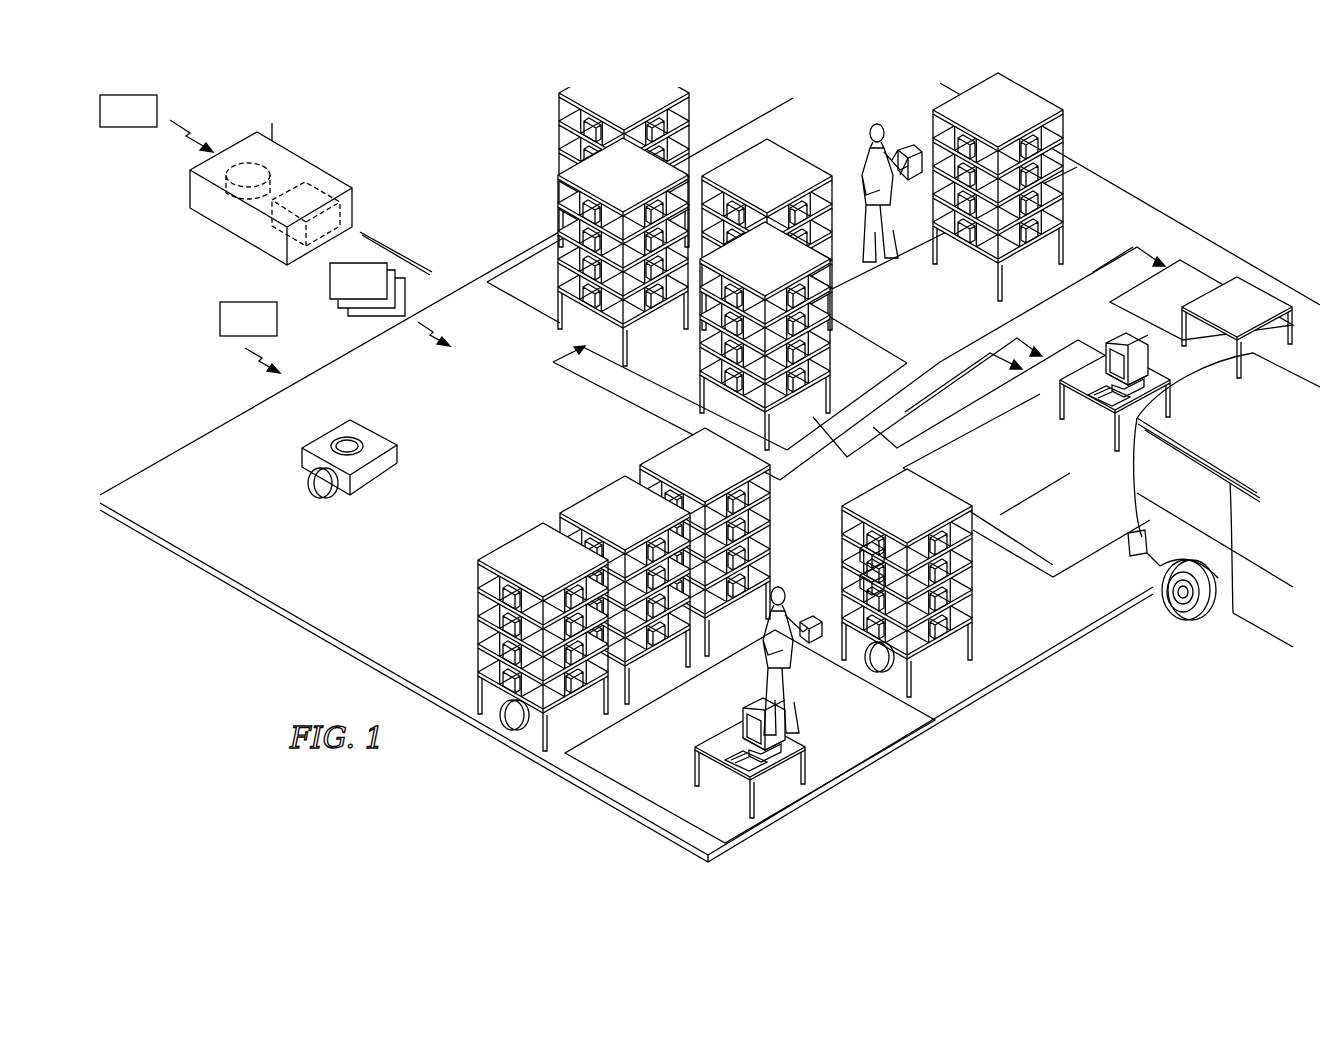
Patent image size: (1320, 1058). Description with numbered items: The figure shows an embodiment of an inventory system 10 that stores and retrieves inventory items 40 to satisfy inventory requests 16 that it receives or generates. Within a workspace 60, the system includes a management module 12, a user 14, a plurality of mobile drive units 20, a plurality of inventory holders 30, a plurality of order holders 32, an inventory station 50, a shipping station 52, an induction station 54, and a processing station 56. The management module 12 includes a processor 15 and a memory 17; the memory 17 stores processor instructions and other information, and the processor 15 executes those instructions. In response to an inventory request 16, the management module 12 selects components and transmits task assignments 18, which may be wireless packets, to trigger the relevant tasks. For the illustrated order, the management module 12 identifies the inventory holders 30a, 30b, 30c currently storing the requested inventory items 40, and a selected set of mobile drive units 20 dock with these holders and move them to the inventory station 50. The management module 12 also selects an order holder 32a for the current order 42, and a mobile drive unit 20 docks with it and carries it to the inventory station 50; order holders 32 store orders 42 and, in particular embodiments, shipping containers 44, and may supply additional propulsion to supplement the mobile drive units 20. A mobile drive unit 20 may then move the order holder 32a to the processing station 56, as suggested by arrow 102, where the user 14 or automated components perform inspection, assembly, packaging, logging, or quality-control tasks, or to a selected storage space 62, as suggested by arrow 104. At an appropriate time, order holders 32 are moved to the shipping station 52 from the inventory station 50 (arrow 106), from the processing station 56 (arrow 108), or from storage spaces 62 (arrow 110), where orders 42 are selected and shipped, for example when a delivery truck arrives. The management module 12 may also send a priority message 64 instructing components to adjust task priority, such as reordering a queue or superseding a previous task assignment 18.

The inventory system 10 is at (515, 195).
The management module 12 is at (271, 184).
The user 14 is at (855, 157).
The processor 15 is at (290, 147).
The inventory requests 16 is at (157, 108).
The memory 17 is at (245, 208).
The task assignments 18 is at (398, 260).
The mobile drive units 20 is at (385, 480).
The inventory holders 30 is at (633, 110).
The inventory holder 30a is at (555, 565).
The inventory holder 30b is at (635, 520).
The inventory holder 30c is at (720, 475).
The order holders 32 is at (773, 182).
The order holder 32a is at (890, 583).
The inventory items 40 is at (606, 589).
The orders 42 is at (852, 612).
The shipping containers 44 is at (852, 556).
The inventory station 50 is at (858, 732).
The shipping station 52 is at (1035, 455).
The induction station 54 is at (881, 261).
The processing station 56 is at (1183, 300).
The workspace 60 is at (990, 770).
The storage space 62 is at (540, 297).
The priority message 64 is at (220, 310).
The arrow 102 is at (976, 341).
The arrow 104 is at (607, 392).
The arrow 106 is at (1052, 586).
The arrow 108 is at (1095, 270).
The arrow 110 is at (955, 381).